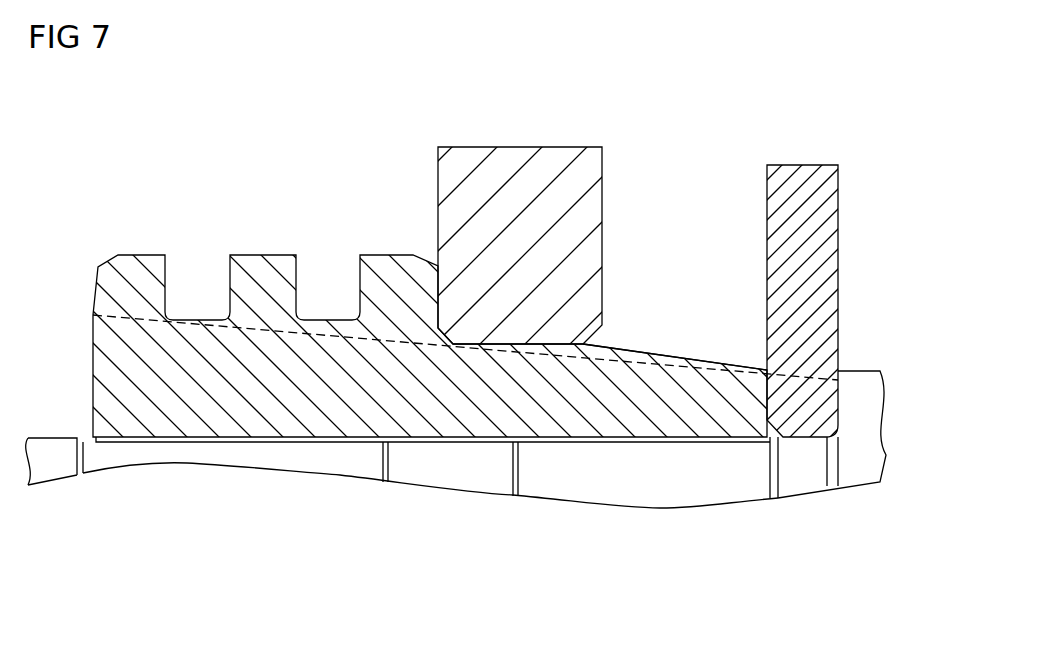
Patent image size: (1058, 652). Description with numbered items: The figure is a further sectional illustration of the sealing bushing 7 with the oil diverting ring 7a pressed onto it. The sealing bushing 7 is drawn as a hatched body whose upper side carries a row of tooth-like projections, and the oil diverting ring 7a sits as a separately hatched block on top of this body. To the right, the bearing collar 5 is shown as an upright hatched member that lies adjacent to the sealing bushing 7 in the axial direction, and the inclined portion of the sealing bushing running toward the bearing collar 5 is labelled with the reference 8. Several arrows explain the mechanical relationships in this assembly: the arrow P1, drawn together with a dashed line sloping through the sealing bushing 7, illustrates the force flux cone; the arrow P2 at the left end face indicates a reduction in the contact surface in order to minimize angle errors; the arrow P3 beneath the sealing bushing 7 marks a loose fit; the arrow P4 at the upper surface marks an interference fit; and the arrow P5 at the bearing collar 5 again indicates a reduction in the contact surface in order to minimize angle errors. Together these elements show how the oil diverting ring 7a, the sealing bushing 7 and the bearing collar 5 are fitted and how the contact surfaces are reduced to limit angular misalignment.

The sealing bushing 7 is at (275, 412).
The oil diverting ring 7a is at (587, 212).
The bearing collar 5 is at (815, 303).
The inclined surface portion 8 is at (590, 400).
The force flux cone P1 is at (262, 322).
The reduction in the contact surface P2 is at (91, 350).
The loose fit P3 is at (452, 442).
The interference fit P4 is at (530, 348).
The reduction in the contact surface P5 is at (772, 397).